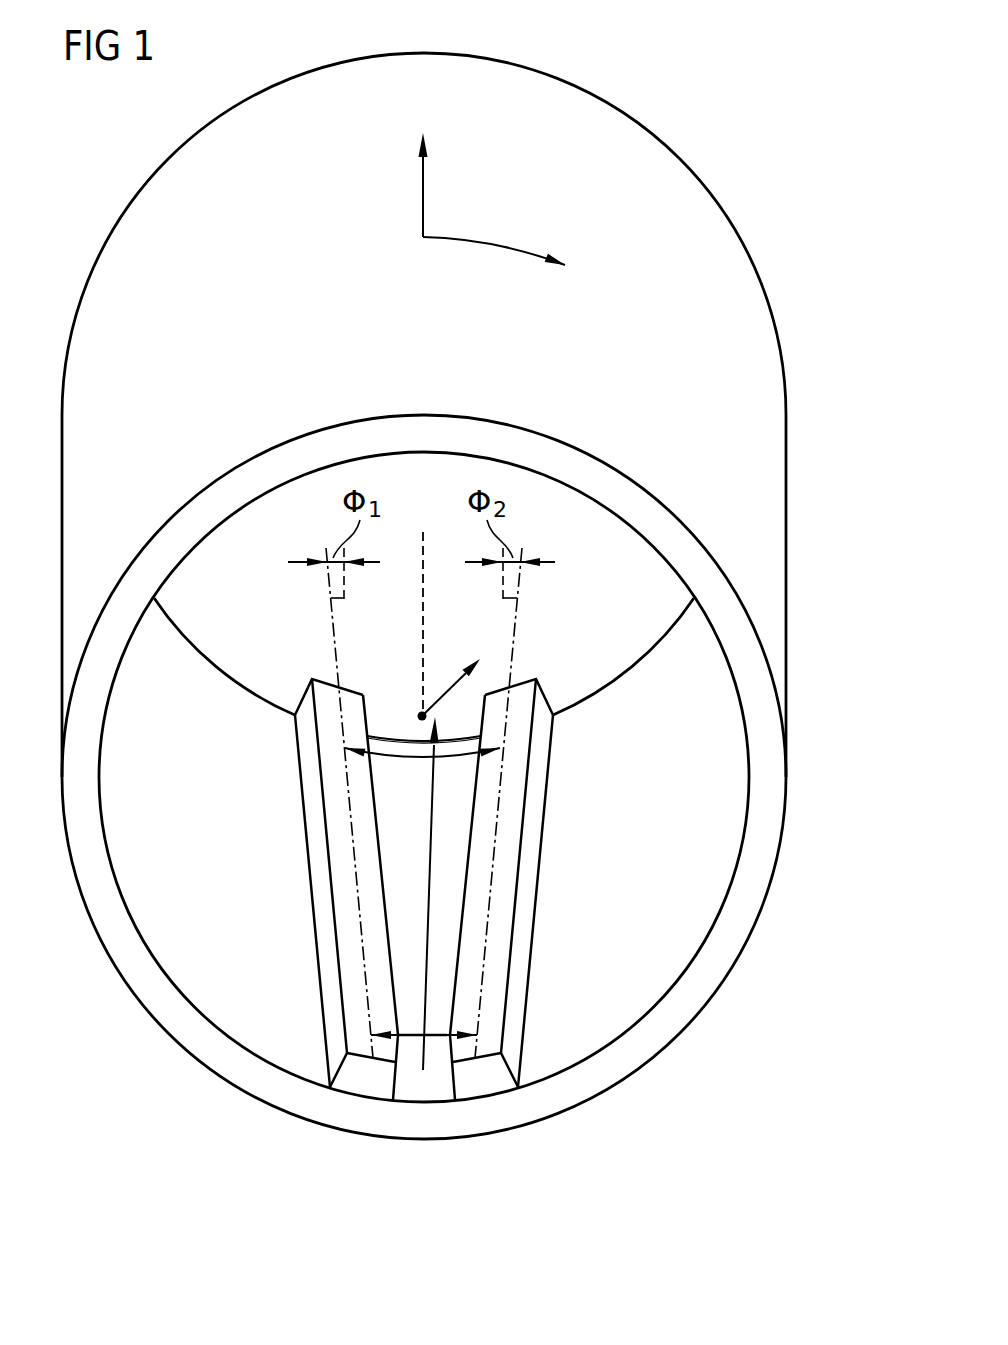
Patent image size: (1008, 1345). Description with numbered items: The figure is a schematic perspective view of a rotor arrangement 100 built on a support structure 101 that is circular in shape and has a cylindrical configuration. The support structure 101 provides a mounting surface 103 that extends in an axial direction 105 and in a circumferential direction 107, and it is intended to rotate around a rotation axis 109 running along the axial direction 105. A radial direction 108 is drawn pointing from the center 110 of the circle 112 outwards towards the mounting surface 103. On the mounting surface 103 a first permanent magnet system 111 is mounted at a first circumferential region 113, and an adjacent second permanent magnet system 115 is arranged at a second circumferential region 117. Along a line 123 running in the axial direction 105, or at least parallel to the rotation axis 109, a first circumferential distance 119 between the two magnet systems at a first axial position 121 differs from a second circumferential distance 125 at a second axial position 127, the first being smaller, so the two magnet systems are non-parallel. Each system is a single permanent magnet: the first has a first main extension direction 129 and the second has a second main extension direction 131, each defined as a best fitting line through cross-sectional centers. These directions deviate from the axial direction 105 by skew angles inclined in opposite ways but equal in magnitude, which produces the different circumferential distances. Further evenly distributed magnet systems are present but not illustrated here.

The rotor arrangement 100 is at (790, 127).
The support structure 101 is at (714, 963).
The mounting surface 103 is at (707, 882).
The axial direction 105 is at (423, 197).
The circumferential direction 107 is at (485, 243).
The radial direction 108 is at (452, 687).
The rotation axis 109 is at (423, 592).
The center 110 is at (420, 713).
The first permanent magnet system 111 is at (362, 1085).
The circle 112 is at (748, 805).
The first circumferential region 113 is at (346, 957).
The second permanent magnet system 115 is at (487, 1085).
The second circumferential region 117 is at (501, 957).
The first circumferential distance 119 is at (410, 1034).
The first axial position 121 is at (437, 1034).
The line 123 is at (430, 857).
The second circumferential distance 125 is at (450, 760).
The second axial position 127 is at (430, 760).
The first main extension direction 129 is at (333, 624).
The second main extension direction 131 is at (515, 624).